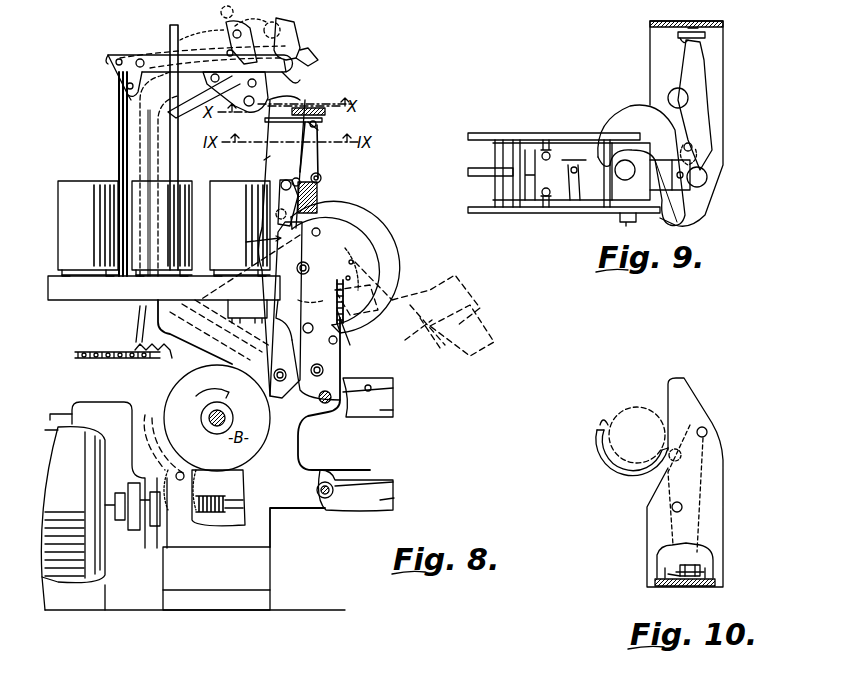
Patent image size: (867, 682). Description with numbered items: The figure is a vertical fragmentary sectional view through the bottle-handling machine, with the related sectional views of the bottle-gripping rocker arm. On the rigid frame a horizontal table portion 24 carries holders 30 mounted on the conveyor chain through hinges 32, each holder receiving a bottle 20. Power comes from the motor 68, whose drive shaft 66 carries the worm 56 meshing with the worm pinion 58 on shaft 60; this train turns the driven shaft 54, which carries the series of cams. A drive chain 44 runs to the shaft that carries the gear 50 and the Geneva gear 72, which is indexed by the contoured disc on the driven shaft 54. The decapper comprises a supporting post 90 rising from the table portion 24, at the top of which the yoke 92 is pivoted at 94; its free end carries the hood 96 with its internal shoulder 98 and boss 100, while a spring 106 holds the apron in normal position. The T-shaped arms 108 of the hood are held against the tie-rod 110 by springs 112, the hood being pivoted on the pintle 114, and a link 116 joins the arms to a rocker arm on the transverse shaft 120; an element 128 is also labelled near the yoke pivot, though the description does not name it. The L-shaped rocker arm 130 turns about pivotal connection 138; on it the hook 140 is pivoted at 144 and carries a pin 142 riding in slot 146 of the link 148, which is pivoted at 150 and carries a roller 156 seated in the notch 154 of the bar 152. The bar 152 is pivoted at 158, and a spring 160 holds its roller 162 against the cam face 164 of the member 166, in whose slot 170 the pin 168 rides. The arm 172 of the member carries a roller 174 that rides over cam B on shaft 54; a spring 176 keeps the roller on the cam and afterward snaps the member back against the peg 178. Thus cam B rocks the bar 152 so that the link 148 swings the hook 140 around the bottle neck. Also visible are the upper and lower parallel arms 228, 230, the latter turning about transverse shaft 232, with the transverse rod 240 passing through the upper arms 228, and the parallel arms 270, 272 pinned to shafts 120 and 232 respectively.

In FIG. 8, the bottle 20 is at (438, 286).
In FIG. 10, the bottle 20 is at (616, 408).
In FIG. 8, the table portion 24 is at (164, 288).
In FIG. 8, the holders 30 is at (86, 184).
In FIG. 8, the hinges 32 is at (84, 274).
In FIG. 8, the drive chain 44 is at (90, 350).
In FIG. 8, the gear 50 is at (134, 348).
In FIG. 8, the driven shaft 54 is at (226, 414).
In FIG. 8, the worm 56 is at (215, 512).
In FIG. 8, the worm pinion 58 is at (200, 486).
In FIG. 8, the shaft 60 is at (177, 487).
In FIG. 8, the drive shaft 66 is at (150, 527).
In FIG. 8, the motor 68 is at (78, 468).
In FIG. 8, the Geneva gear 72 is at (136, 332).
In FIG. 8, the supporting post 90 is at (118, 125).
In FIG. 8, the yoke 92 is at (170, 56).
In FIG. 9, the yoke 92 is at (493, 132).
In FIG. 8, the pivotal mounting 94 is at (108, 62).
In FIG. 8, the hood 96 is at (300, 46).
In FIG. 9, the hood 96 is at (655, 192).
In FIG. 9, the internal shoulder 98 is at (678, 190).
In FIG. 9, the boss 100 is at (631, 171).
In FIG. 9, the spring 106 is at (578, 175).
In FIG. 8, the T-shaped arms 108 is at (268, 108).
In FIG. 8, the tie-rod 110 is at (220, 30).
In FIG. 9, the tie-rod 110 is at (528, 174).
In FIG. 9, the springs 112 is at (546, 136).
In FIG. 8, the pintle 114 is at (278, 20).
In FIG. 9, the pintle 114 is at (630, 224).
In FIG. 8, the link 116 is at (155, 163).
In FIG. 9, the link 116 is at (482, 170).
In FIG. 8, the transverse shaft 120 is at (326, 405).
In FIG. 8, the pin 128 is at (126, 92).
In FIG. 8, the L-shaped rocker arm 130 is at (340, 92).
In FIG. 9, the L-shaped rocker arm 130 is at (725, 26).
In FIG. 10, the L-shaped rocker arm 130 is at (712, 488).
In FIG. 8, the pivotal connection 138 is at (292, 312).
In FIG. 8, the hook 140 is at (283, 162).
In FIG. 9, the hook 140 is at (614, 126).
In FIG. 10, the hook 140 is at (602, 455).
In FIG. 9, the pin 142 is at (692, 146).
In FIG. 10, the pin 142 is at (706, 458).
In FIG. 9, the pivotal connection 144 is at (708, 176).
In FIG. 10, the pivotal connection 144 is at (708, 432).
In FIG. 9, the slot 146 is at (712, 152).
In FIG. 10, the slot 146 is at (660, 486).
In FIG. 8, the link 148 is at (305, 106).
In FIG. 9, the link 148 is at (690, 64).
In FIG. 10, the link 148 is at (690, 552).
In FIG. 9, the pivotal mounting 150 is at (686, 95).
In FIG. 10, the pivotal mounting 150 is at (671, 508).
In FIG. 8, the bar 152 is at (313, 160).
In FIG. 9, the bar 152 is at (680, 34).
In FIG. 10, the bar 152 is at (668, 576).
In FIG. 8, the notch 154 is at (322, 124).
In FIG. 10, the notch 154 is at (676, 572).
In FIG. 8, the roller 156 is at (318, 122).
In FIG. 9, the roller 156 is at (706, 36).
In FIG. 10, the roller 156 is at (700, 568).
In FIG. 8, the pivotal mounting 158 is at (300, 178).
In FIG. 8, the spring 160 is at (320, 198).
In FIG. 8, the roller 162 is at (278, 217).
In FIG. 8, the cam face 164 is at (249, 243).
In FIG. 8, the member 166 is at (322, 262).
In FIG. 8, the pin 168 is at (322, 228).
In FIG. 8, the slot 170 is at (308, 283).
In FIG. 8, the arm 172 is at (288, 360).
In FIG. 8, the roller 174 is at (283, 382).
In FIG. 8, the spring 176 is at (344, 332).
In FIG. 8, the peg 178 is at (312, 362).
In FIG. 8, the upper parallel arms 228 is at (386, 378).
In FIG. 8, the lower parallel arms 230 is at (375, 470).
In FIG. 8, the transverse shaft 232 is at (328, 482).
In FIG. 8, the transverse rod 240 is at (368, 384).
In FIG. 8, the parallel arm 270 is at (385, 414).
In FIG. 8, the parallel arm 272 is at (384, 500).